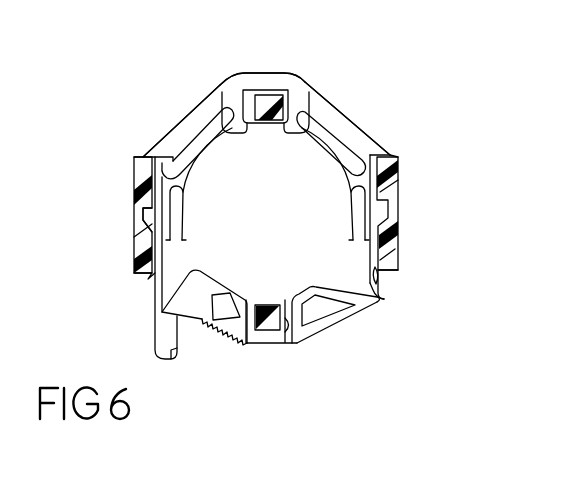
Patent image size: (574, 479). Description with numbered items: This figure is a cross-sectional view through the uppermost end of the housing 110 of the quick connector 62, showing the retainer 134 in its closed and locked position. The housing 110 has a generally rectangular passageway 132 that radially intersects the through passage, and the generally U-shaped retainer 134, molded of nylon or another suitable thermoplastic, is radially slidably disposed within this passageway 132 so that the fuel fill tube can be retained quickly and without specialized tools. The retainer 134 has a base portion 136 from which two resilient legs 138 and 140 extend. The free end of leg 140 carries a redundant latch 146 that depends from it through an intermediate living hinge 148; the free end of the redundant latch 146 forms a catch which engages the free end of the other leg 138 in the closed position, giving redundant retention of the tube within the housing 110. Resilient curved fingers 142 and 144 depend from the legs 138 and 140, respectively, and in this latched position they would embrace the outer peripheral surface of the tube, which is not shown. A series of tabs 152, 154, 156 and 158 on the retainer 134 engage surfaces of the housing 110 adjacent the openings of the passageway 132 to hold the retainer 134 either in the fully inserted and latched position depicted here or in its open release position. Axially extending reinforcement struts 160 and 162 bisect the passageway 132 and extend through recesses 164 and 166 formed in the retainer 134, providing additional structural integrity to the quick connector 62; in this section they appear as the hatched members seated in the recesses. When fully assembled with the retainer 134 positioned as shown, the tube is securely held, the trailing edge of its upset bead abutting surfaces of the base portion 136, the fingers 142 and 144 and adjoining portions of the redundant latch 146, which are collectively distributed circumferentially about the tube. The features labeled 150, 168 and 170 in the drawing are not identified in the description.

The quick connector 62 is at (152, 103).
The housing 110 is at (329, 216).
The passageway 132 is at (379, 315).
The retainer 134 is at (374, 123).
The base portion 136 is at (246, 96).
The leg 138 is at (108, 251).
The leg 140 is at (423, 245).
The resilient curved finger 142 is at (225, 217).
The resilient curved finger 144 is at (318, 206).
The redundant latch 146 is at (341, 344).
The living hinge 148 is at (370, 333).
The hook 150 is at (170, 323).
The tab 152 is at (390, 143).
The tab 154 is at (427, 287).
The tab 156 is at (112, 195).
The tab 158 is at (112, 290).
The reinforcement strut 160 is at (303, 71).
The reinforcement strut 162 is at (235, 351).
The recess 164 is at (189, 104).
The recess 166 is at (261, 364).
The notch 168 is at (99, 213).
The notch 170 is at (436, 213).